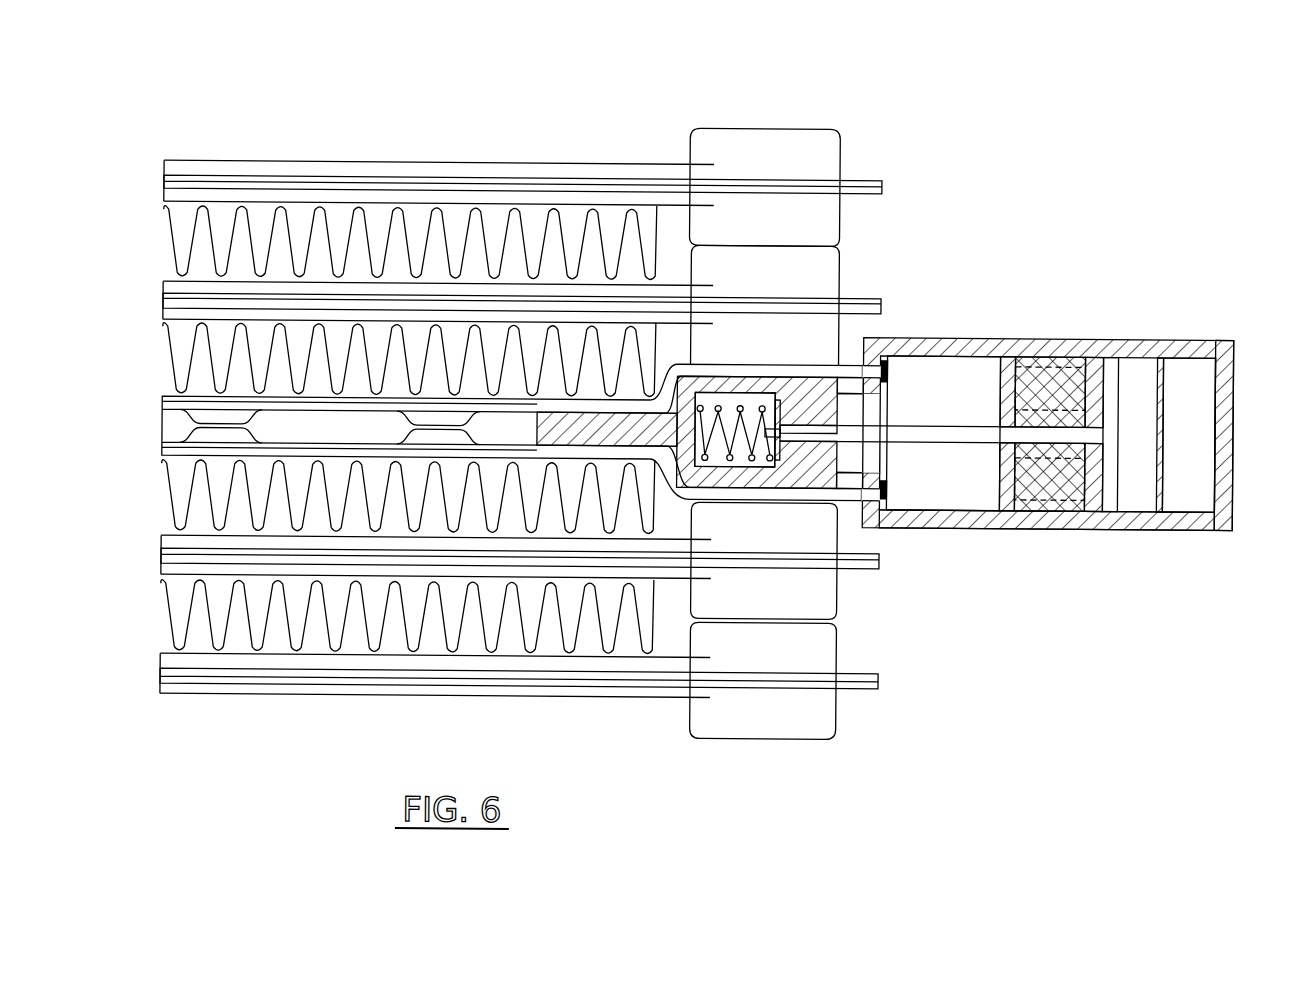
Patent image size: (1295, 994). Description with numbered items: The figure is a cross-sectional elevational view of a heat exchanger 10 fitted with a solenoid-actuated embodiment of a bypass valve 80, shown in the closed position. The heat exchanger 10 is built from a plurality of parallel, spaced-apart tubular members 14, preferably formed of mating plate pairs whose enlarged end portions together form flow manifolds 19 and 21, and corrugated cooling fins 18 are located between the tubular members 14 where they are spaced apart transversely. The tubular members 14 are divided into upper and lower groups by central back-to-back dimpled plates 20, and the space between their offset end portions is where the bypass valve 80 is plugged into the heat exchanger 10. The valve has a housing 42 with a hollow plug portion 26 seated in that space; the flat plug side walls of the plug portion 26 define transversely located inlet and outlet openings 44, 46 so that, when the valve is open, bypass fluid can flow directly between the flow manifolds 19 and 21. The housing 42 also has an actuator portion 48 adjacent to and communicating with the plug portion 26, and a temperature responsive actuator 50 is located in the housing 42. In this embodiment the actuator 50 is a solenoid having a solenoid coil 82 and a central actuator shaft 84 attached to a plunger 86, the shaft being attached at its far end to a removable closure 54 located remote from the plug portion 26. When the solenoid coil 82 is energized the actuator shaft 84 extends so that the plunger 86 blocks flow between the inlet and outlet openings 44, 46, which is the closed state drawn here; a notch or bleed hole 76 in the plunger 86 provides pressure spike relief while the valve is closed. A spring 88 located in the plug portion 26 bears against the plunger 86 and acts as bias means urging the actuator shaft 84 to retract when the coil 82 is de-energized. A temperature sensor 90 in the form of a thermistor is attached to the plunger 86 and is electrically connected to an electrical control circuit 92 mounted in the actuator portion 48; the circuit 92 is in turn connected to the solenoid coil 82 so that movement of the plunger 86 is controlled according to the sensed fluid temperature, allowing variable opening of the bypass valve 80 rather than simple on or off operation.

The heat exchanger 10 is at (925, 59).
The tubular members 14 is at (162, 181).
The corrugated cooling fins 18 is at (165, 230).
The flow manifold 19 is at (925, 193).
The dimpled plates 20 is at (165, 450).
The flow manifold 21 is at (922, 651).
The hollow plug portion 26 is at (845, 517).
The housing 42 is at (998, 516).
The inlet opening 44 is at (773, 373).
The outlet opening 46 is at (767, 486).
The actuator portion 48 is at (1142, 513).
The temperature responsive actuator 50 is at (950, 374).
The removable closure 54 is at (1225, 457).
The bleed hole 76 is at (758, 373).
The bypass valve 80 is at (1209, 295).
The solenoid coil 82 is at (1045, 364).
The actuator shaft 84 is at (942, 434).
The plunger 86 is at (847, 364).
The spring 88 is at (722, 373).
The temperature sensor 90 is at (735, 433).
The electrical control circuit 92 is at (1200, 397).